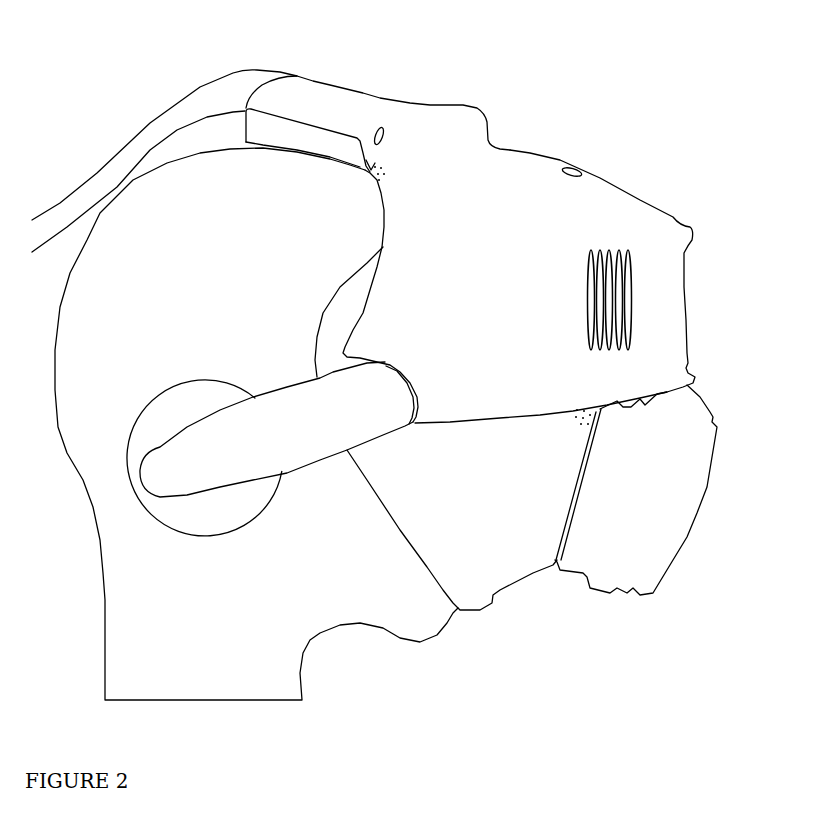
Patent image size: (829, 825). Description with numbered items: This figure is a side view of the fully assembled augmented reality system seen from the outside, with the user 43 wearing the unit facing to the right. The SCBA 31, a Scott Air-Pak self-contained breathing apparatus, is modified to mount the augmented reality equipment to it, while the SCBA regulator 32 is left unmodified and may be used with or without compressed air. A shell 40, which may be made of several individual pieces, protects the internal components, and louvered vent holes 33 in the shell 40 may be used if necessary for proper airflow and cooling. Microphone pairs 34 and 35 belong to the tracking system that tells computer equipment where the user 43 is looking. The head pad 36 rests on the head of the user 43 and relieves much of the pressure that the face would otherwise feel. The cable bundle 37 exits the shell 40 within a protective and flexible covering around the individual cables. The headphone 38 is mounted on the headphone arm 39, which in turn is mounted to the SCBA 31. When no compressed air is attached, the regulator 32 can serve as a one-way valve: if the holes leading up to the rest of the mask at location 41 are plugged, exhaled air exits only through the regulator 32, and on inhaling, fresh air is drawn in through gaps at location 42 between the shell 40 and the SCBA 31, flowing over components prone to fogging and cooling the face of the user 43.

The SCBA 31 is at (400, 540).
The SCBA regulator 32 is at (699, 509).
The louvered vent holes 33 is at (636, 297).
The microphone pair 34 is at (577, 167).
The microphone pair 35 is at (378, 126).
The head pad 36 is at (244, 134).
The cable bundle 37 is at (121, 147).
The headphone 38 is at (159, 526).
The headphone arm 39 is at (281, 384).
The shell 40 is at (637, 187).
The location of holes leading up to the mask 41 is at (578, 423).
The location of gaps 42 is at (369, 176).
The user 43 is at (94, 522).